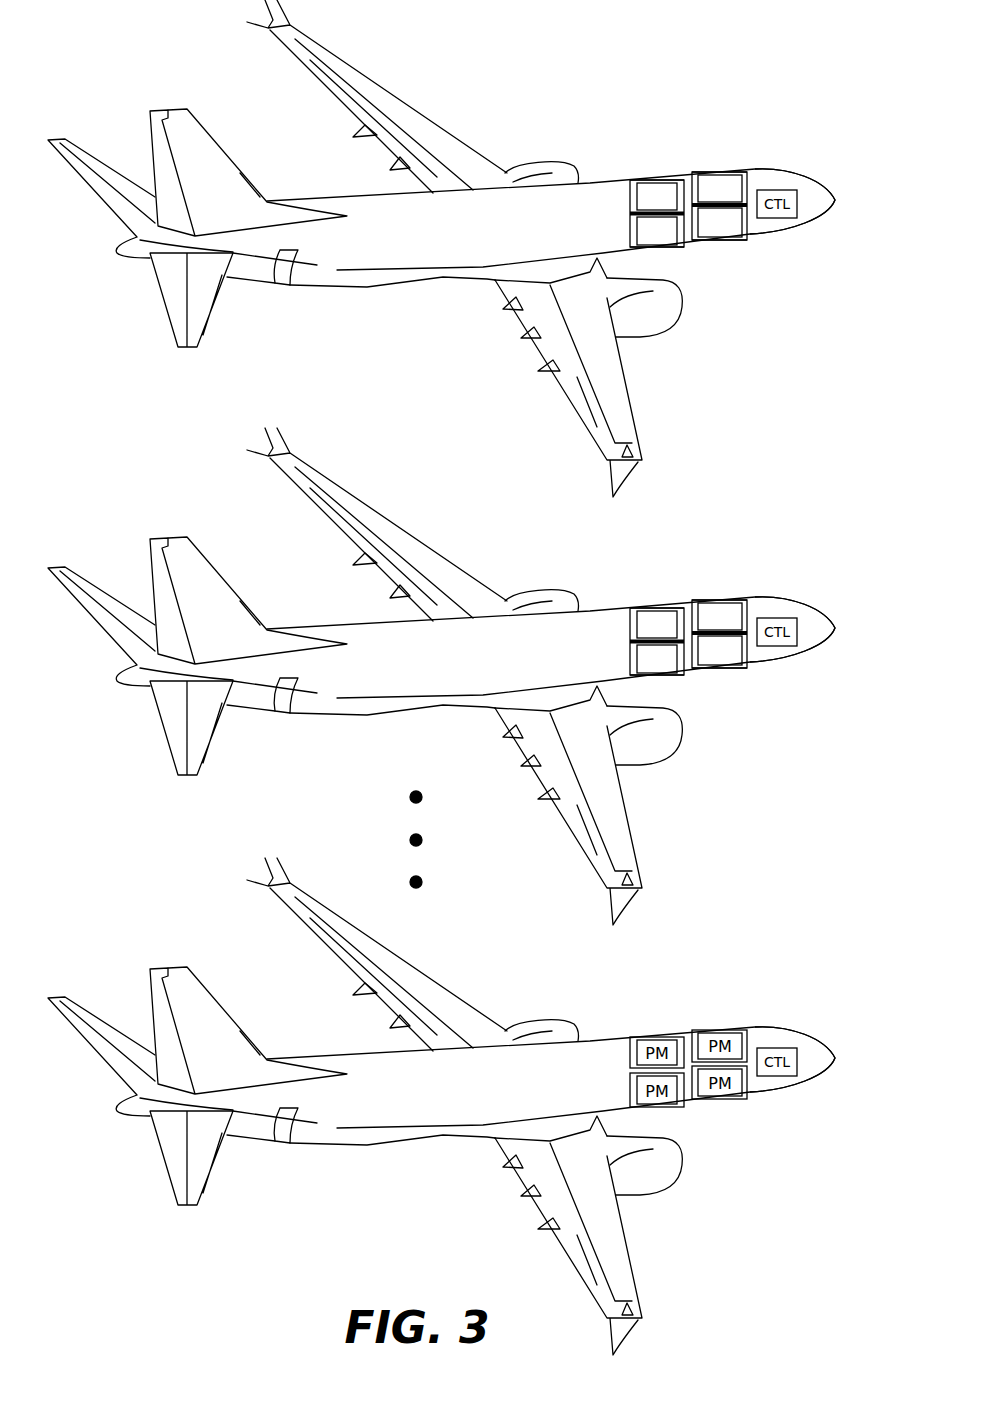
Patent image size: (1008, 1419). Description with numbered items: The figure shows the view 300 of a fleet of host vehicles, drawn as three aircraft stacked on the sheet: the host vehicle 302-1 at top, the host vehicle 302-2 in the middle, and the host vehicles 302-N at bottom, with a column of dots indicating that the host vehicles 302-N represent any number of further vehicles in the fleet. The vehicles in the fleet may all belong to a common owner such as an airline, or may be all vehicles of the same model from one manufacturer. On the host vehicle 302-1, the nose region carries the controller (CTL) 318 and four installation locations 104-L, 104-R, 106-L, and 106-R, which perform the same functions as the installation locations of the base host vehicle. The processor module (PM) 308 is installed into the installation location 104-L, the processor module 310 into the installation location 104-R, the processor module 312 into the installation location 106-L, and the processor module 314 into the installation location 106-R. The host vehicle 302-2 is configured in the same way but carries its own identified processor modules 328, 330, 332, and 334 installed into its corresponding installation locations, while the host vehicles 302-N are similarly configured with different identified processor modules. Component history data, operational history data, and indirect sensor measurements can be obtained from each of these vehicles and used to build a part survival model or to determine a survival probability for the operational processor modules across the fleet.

The view 300 is at (157, 42).
The host vehicle 302-1 is at (817, 200).
The host vehicle 302-2 is at (815, 630).
The host vehicles 302-N is at (815, 1058).
The installation location 104-L is at (750, 187).
The installation location 104-R is at (749, 228).
The installation location 106-L is at (680, 181).
The installation location 106-R is at (657, 250).
The processor module 308 is at (717, 172).
The processor module 310 is at (720, 239).
The processor module 312 is at (633, 190).
The processor module 314 is at (633, 238).
The controller 318 is at (782, 221).
The processor module 328 is at (745, 613).
The processor module 330 is at (740, 656).
The processor module 332 is at (635, 627).
The processor module 334 is at (635, 672).